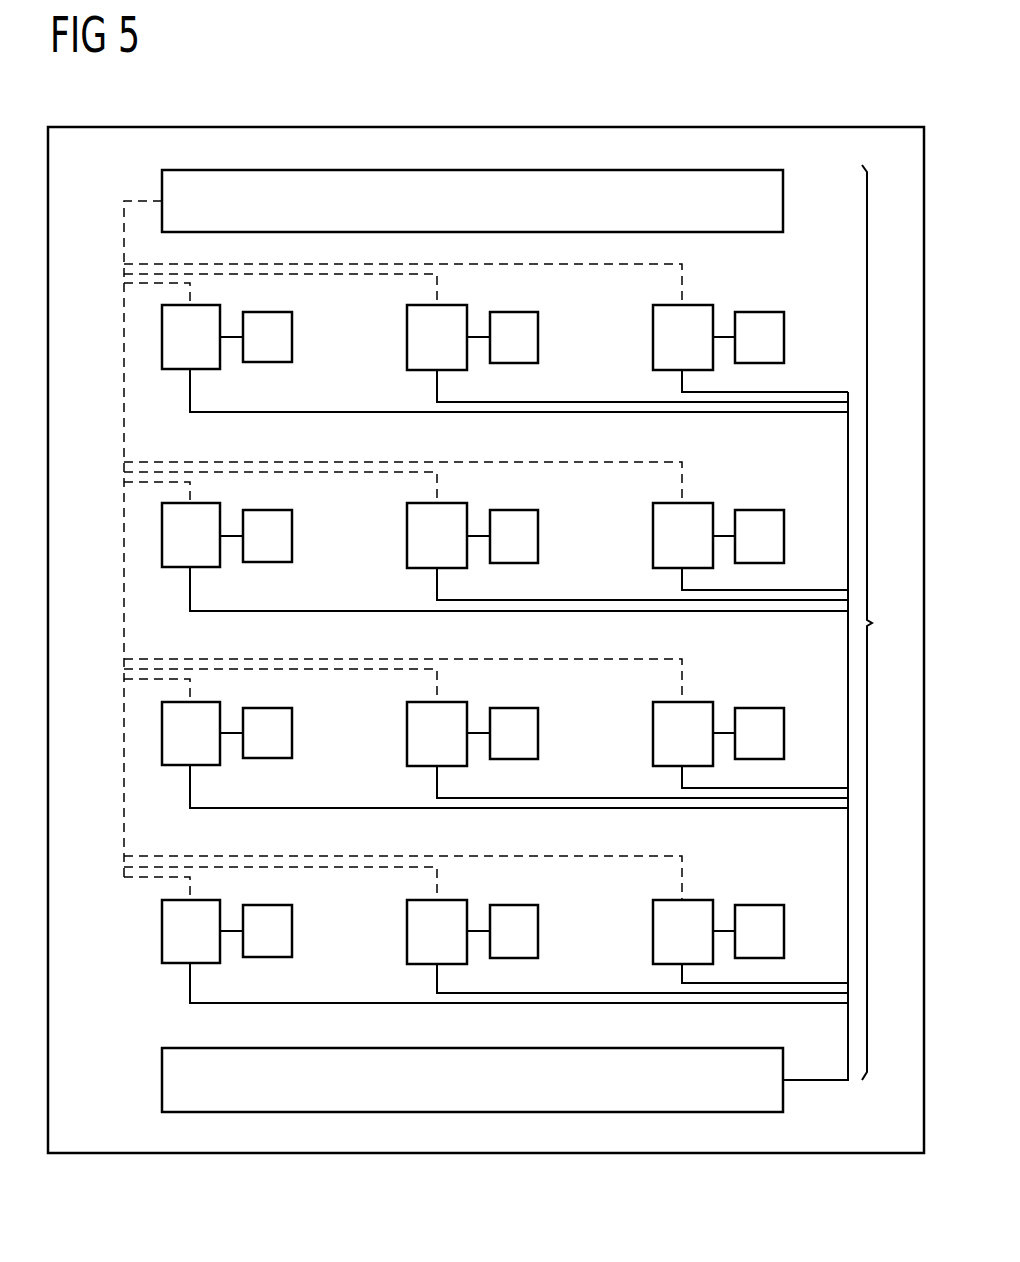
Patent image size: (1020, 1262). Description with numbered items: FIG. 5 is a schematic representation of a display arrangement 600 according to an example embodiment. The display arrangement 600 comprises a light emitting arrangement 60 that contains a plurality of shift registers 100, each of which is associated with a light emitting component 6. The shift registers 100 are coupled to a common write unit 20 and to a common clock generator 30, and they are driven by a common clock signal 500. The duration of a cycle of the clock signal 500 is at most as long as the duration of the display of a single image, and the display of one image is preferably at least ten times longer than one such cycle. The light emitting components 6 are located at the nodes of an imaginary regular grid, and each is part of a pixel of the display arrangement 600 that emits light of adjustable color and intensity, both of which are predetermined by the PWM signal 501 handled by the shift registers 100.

The display arrangement 600 is at (697, 103).
The clock generator 30 is at (785, 200).
The write unit 20 is at (162, 1080).
The light emitting arrangement 60 is at (883, 622).
The clock signal 500 is at (124, 378).
The PWM signal 501 is at (225, 335).
The shift register 100 is at (653, 338).
The light emitting component 6 is at (817, 923).